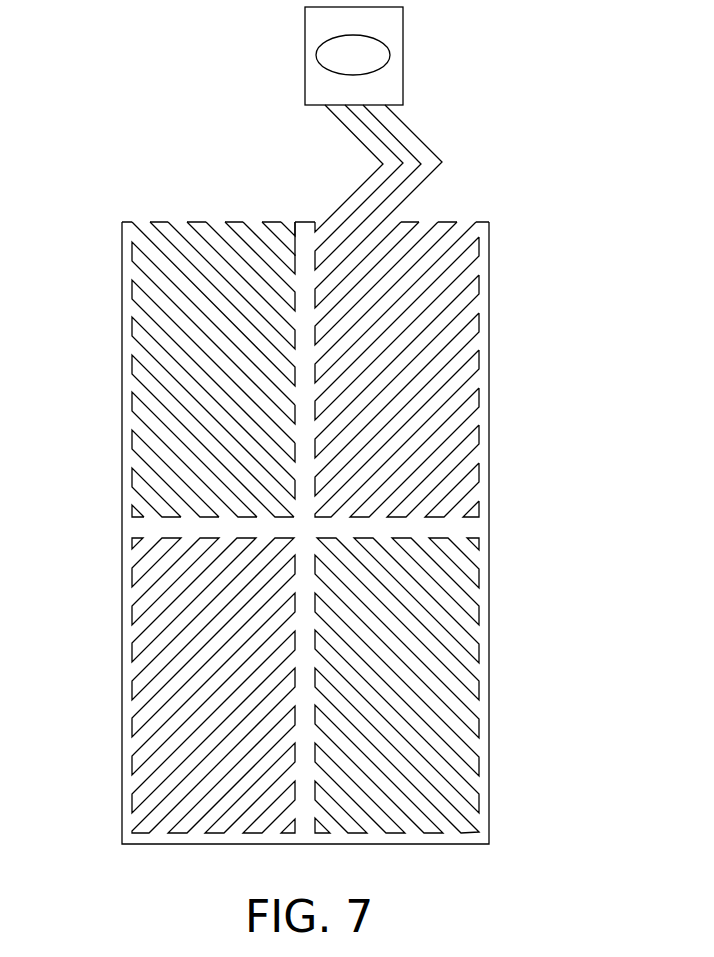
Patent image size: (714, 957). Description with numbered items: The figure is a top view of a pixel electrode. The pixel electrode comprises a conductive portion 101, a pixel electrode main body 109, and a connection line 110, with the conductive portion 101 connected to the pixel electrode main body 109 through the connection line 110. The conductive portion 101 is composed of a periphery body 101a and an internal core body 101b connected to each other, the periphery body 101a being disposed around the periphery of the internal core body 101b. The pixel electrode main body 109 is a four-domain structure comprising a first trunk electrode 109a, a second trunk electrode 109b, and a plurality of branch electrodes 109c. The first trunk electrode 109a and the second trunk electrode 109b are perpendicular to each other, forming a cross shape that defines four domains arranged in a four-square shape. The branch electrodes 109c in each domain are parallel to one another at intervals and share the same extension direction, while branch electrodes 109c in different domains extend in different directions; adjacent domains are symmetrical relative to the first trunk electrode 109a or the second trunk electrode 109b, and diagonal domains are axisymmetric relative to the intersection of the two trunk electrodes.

The conductive portion 101 is at (432, 62).
The periphery body 101a is at (378, 13).
The internal core body 101b is at (372, 60).
The connection line 110 is at (417, 177).
The pixel electrode main body 109 is at (318, 439).
The first trunk electrode 109a is at (455, 522).
The second trunk electrode 109b is at (313, 428).
The branch electrodes 109c is at (408, 264).